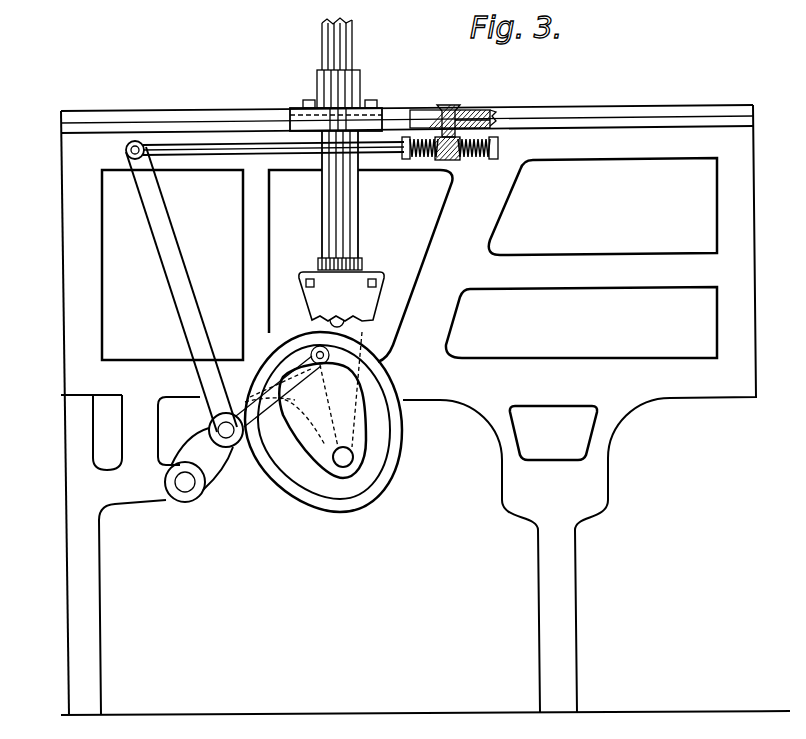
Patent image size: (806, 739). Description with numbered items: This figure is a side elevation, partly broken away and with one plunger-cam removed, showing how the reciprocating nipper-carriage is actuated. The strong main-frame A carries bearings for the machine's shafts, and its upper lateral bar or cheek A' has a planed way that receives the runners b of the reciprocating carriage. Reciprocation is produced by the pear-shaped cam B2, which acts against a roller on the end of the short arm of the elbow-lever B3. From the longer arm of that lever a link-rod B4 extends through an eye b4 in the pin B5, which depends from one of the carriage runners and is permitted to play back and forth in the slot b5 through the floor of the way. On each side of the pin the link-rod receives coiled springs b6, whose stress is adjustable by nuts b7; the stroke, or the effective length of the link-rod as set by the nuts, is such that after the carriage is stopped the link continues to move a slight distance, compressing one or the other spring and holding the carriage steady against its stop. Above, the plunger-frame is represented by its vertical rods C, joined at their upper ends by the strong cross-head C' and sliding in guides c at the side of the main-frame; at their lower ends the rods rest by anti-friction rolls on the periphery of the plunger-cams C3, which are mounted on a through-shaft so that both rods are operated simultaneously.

The main-frame A is at (425, 410).
The upper lateral bars or cheeks A' is at (407, 107).
The pear-shaped cam B2 is at (367, 407).
The elbow-lever B3 is at (188, 322).
The link-rod B4 is at (220, 150).
The pin B5 is at (437, 108).
The runners b is at (483, 110).
The eye b4 is at (446, 158).
The slot b5 is at (318, 348).
The coiled springs b6 is at (425, 157).
The nuts b7 is at (404, 158).
The vertical rods C is at (336, 138).
The cross-head C' is at (349, 307).
The plunger-cams C3 is at (390, 437).
The guides c is at (360, 262).